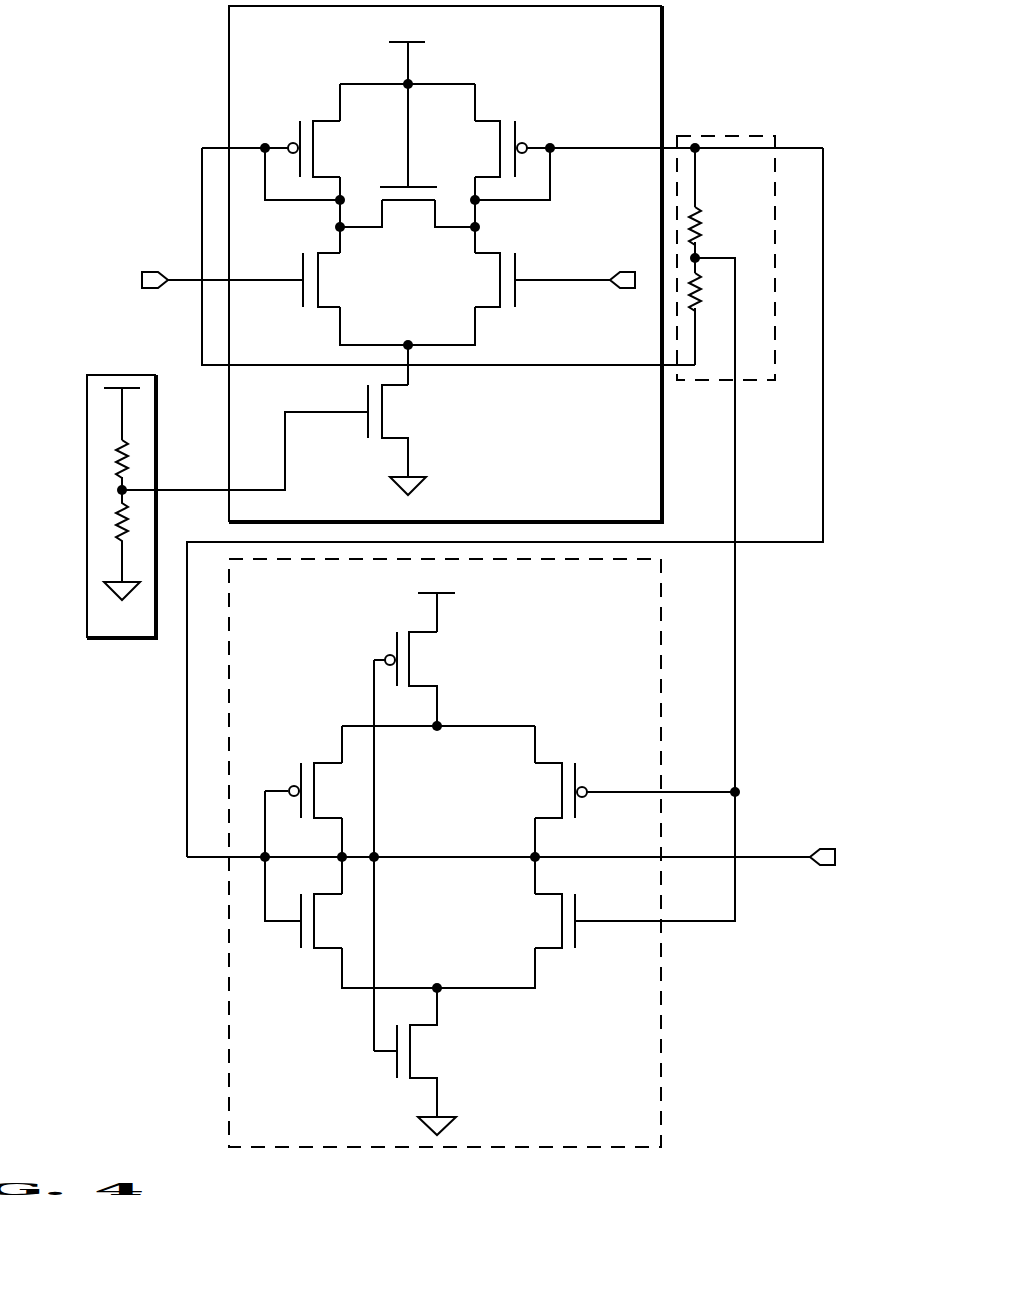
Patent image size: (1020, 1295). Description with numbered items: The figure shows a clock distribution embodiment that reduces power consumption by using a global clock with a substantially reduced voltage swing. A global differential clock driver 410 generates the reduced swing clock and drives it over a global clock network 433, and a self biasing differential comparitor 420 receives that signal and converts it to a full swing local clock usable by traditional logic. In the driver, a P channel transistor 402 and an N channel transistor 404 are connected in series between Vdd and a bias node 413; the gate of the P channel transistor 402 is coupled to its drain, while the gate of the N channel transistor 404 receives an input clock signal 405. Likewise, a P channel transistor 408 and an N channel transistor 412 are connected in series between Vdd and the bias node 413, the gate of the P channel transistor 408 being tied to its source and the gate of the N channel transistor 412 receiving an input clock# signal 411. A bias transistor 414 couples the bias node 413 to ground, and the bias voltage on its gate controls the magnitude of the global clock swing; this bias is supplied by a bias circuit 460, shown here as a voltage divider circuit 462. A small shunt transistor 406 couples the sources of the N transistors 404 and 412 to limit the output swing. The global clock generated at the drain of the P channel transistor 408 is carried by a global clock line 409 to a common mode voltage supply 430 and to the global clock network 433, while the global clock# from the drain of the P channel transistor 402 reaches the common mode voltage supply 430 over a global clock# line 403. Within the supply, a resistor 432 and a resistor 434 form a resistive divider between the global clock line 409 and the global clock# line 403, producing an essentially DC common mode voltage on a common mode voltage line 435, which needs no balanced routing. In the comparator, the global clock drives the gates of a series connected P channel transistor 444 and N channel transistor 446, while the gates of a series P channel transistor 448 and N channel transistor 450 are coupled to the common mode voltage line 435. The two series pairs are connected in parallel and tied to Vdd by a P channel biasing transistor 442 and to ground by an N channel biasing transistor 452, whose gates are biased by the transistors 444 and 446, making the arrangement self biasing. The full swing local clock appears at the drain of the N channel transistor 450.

The P channel transistor 402 is at (317, 158).
The global clock# line 403 is at (606, 364).
The N channel transistor 404 is at (321, 290).
The input clock signal 405 is at (122, 280).
The shunt transistor 406 is at (393, 227).
The P channel transistor 408 is at (469, 158).
The global clock line 409 is at (612, 144).
The global differential clock driver 410 is at (657, 520).
The input clock# signal 411 is at (613, 272).
The N channel transistor 412 is at (469, 290).
The bias node 413 is at (405, 345).
The bias transistor 414 is at (389, 422).
The differential comparitor 420 is at (655, 1141).
The common mode voltage supply 430 is at (756, 213).
The resistor 432 is at (710, 232).
The global clock network 433 is at (825, 407).
The resistor 434 is at (703, 295).
The common mode voltage line 435 is at (737, 642).
The P channel biasing transistor 442 is at (421, 668).
The P channel transistor 444 is at (323, 801).
The N channel transistor 446 is at (323, 931).
The P channel transistor 448 is at (526, 801).
The N channel transistor 450 is at (526, 931).
The N channel biasing transistor 452 is at (423, 1064).
The bias circuit 460 is at (128, 556).
The voltage divider circuit 462 is at (116, 446).